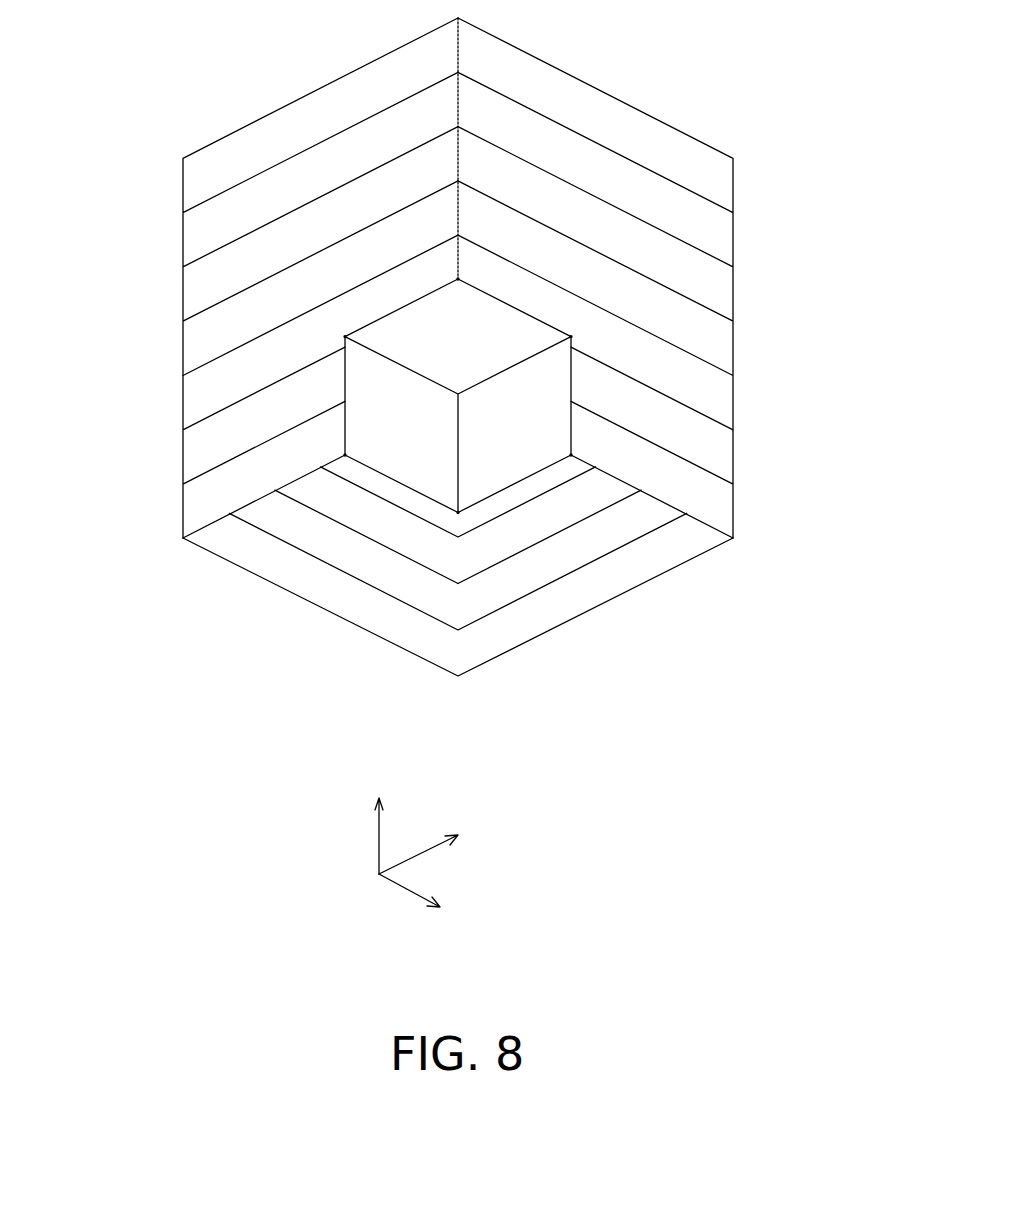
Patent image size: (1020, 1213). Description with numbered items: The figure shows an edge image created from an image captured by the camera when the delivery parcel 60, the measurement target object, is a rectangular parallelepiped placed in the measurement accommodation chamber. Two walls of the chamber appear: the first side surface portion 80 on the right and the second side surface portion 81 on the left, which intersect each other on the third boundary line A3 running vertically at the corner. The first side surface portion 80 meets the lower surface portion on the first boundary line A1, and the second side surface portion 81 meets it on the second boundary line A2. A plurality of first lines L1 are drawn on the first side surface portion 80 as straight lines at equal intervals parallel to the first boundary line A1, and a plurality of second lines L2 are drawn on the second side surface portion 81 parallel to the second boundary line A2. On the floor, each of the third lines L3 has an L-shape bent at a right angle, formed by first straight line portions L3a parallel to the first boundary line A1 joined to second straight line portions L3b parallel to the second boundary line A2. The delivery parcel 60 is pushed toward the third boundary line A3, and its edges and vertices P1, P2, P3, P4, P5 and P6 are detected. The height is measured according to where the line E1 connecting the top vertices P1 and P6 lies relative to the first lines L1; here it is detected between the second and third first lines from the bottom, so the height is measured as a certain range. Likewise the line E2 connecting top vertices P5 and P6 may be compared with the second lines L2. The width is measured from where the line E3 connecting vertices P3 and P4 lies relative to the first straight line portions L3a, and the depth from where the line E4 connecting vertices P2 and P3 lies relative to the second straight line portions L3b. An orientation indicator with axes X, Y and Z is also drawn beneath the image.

The first side surface portion 80 is at (718, 233).
The second side surface portion 81 is at (205, 237).
The delivery parcel 60 is at (343, 387).
The first boundary line A1 is at (613, 476).
The second boundary line A2 is at (303, 476).
The third boundary line A3 is at (458, 165).
The first lines L1 is at (647, 372).
The second lines L2 is at (349, 291).
The third lines L3 is at (348, 528).
The first straight line portions L3a is at (370, 539).
The second straight line portions L3b is at (535, 545).
The vertex P1 is at (571, 337).
The vertex P2 is at (571, 456).
The vertex P3 is at (457, 511).
The vertex P4 is at (345, 456).
The vertex P5 is at (345, 337).
The vertex P6 is at (457, 279).
The line connecting vertices P1 and P6 E1 is at (496, 299).
The line connecting vertices P5 and P6 E2 is at (418, 299).
The line connecting vertices P3 and P4 E3 is at (391, 479).
The line connecting vertices P2 and P3 E4 is at (525, 479).
The X axis X is at (418, 894).
The Y axis Y is at (421, 851).
The Z axis Z is at (377, 835).